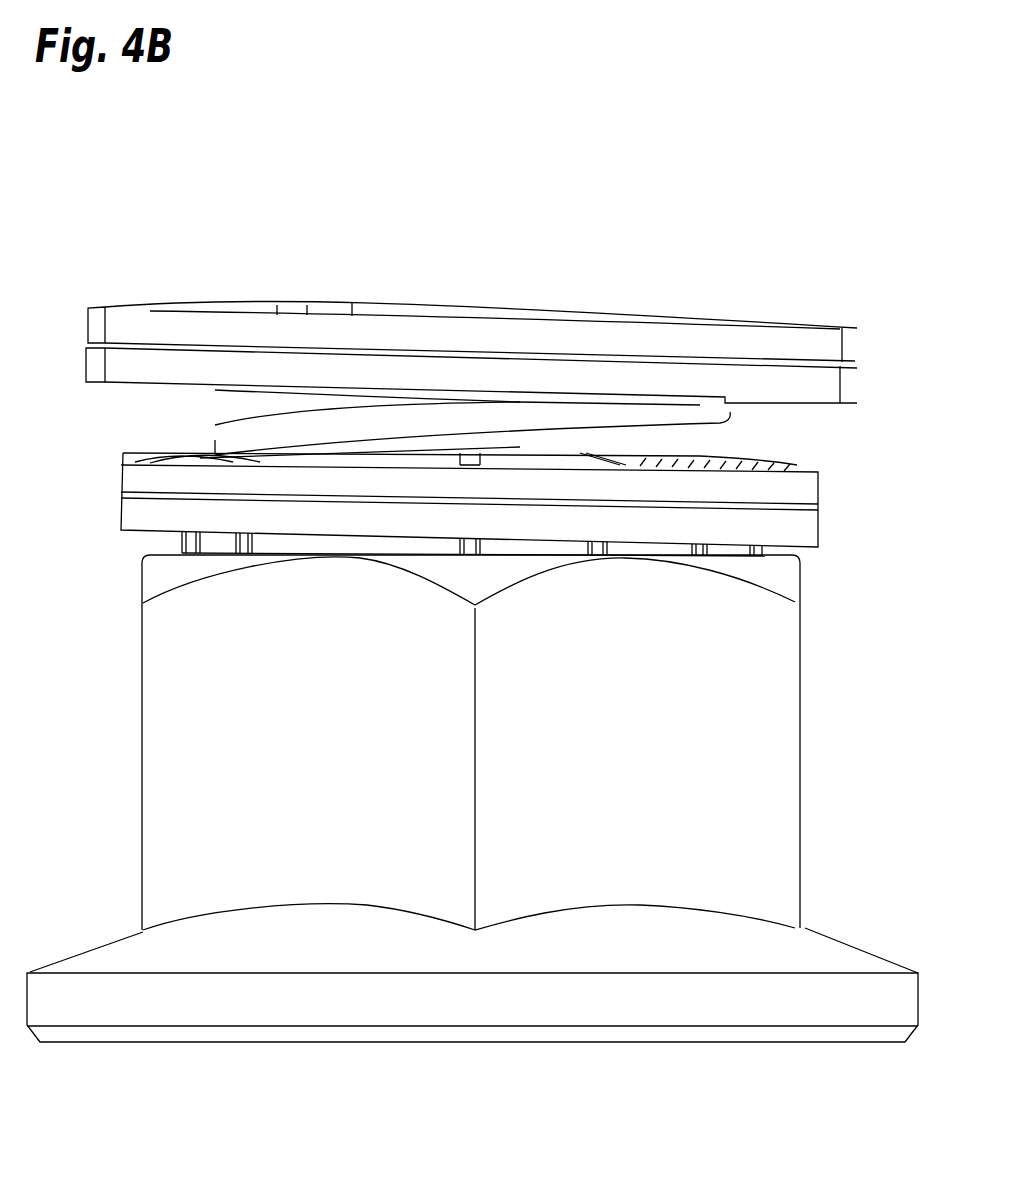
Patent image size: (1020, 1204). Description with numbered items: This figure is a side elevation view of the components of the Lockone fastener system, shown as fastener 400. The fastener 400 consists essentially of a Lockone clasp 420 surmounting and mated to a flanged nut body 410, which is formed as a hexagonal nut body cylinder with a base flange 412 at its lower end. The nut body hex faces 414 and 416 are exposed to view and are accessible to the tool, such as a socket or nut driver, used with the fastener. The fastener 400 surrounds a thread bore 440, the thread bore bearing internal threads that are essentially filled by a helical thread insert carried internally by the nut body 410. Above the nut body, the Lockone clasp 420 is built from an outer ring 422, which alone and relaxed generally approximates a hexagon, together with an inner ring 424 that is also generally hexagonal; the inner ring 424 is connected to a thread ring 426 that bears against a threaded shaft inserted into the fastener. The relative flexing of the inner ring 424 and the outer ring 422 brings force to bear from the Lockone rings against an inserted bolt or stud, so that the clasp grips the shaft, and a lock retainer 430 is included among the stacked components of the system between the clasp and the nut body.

The fastener 400 is at (650, 158).
The nut body 410 is at (167, 578).
The base flange 412 is at (87, 985).
The nut body hex face 414 is at (742, 765).
The nut body hex face 416 is at (330, 740).
The Lockone clasp 420 is at (770, 268).
The Lockone outer ring 422 is at (70, 330).
The Lockone inner ring 424 is at (847, 513).
The Lockone thread ring 426 is at (223, 408).
The lock retainer 430 is at (200, 542).
The thread bore 440 is at (480, 253).